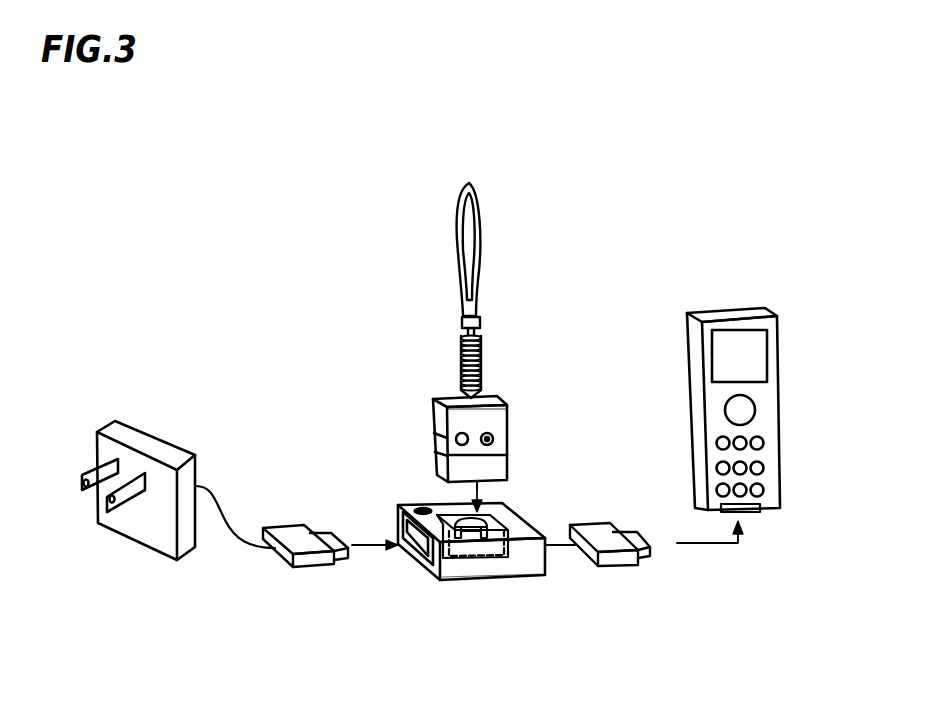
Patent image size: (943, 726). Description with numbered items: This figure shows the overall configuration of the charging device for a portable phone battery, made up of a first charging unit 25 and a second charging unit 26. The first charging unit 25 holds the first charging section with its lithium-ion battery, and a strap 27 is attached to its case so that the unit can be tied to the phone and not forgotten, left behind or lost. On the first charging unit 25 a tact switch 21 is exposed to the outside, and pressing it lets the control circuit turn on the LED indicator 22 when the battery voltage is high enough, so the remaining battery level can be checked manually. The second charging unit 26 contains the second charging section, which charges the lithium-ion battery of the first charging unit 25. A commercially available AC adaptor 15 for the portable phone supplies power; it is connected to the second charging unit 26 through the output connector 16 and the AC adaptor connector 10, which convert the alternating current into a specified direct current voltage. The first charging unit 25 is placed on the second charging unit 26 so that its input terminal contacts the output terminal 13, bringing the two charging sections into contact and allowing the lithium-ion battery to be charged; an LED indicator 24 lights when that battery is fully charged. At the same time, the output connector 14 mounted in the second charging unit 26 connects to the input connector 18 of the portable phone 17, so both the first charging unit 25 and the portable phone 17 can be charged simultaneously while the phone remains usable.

The AC adaptor connector 10 is at (396, 523).
The output terminal 13 is at (490, 513).
The output connector 14 is at (624, 567).
The AC adaptor 15 is at (162, 435).
The output connector 16 is at (313, 560).
The portable phone 17 is at (781, 372).
The input connector 18 is at (749, 513).
The tact switch 21 is at (435, 427).
The LED indicator 22 is at (493, 439).
The LED indicator 24 is at (422, 506).
The first charging unit 25 is at (499, 398).
The second charging unit 26 is at (488, 574).
The strap 27 is at (481, 322).